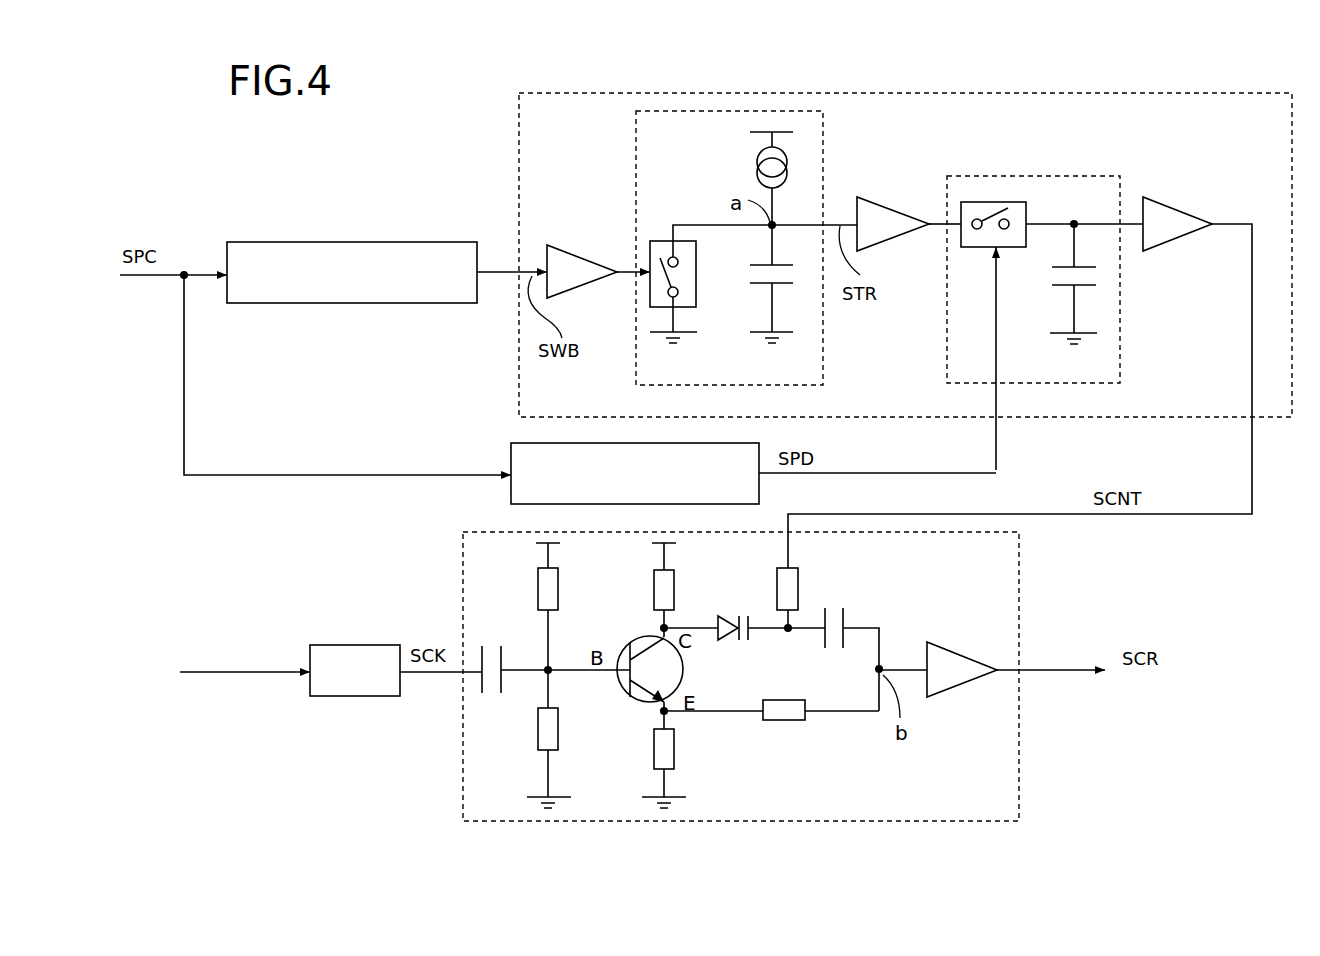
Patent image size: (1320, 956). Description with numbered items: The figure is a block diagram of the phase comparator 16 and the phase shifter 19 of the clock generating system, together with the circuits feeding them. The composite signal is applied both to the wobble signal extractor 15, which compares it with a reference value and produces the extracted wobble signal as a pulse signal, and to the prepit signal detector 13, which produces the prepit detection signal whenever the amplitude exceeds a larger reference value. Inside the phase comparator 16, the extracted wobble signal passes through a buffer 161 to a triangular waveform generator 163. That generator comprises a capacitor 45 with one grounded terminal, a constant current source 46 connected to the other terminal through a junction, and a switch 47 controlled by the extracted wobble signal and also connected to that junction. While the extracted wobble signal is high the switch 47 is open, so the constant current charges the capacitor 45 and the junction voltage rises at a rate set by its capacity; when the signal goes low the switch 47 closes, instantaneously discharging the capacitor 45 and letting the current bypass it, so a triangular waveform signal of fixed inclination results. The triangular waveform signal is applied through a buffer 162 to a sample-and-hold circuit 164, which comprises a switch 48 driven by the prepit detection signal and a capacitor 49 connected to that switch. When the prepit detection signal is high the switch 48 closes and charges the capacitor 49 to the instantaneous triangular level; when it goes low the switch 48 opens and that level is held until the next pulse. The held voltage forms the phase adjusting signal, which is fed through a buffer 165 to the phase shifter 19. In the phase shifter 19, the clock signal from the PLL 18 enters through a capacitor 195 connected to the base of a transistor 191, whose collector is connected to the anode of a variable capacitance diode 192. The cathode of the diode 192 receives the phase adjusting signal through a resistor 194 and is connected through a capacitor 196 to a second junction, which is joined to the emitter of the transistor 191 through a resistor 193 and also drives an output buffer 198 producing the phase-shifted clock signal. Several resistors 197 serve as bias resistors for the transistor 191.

The prepit signal detector 13 is at (511, 458).
The wobble signal extractor 15 is at (333, 243).
The phase comparator 16 is at (519, 130).
The phase-locked loop (PLL) 18 is at (360, 645).
The phase shifter 19 is at (1020, 745).
The capacitor 45 is at (793, 277).
The constant current source 46 is at (757, 158).
The switch 47 is at (697, 284).
The switch 48 is at (973, 248).
The capacitor 49 is at (1058, 268).
The buffer 161 is at (578, 258).
The buffer 162 is at (883, 205).
The triangular waveform generator 163 is at (636, 170).
The sample-and-hold circuit 164 is at (1040, 176).
The buffer 165 is at (1182, 210).
The transistor 191 is at (632, 648).
The variable capacitance diode 192 is at (725, 618).
The resistor 193 is at (788, 722).
The resistor 194 is at (800, 590).
The capacitor 195 is at (492, 688).
The capacitor 196 is at (848, 612).
The resistors 197 is at (538, 593).
The buffer 198 is at (977, 682).